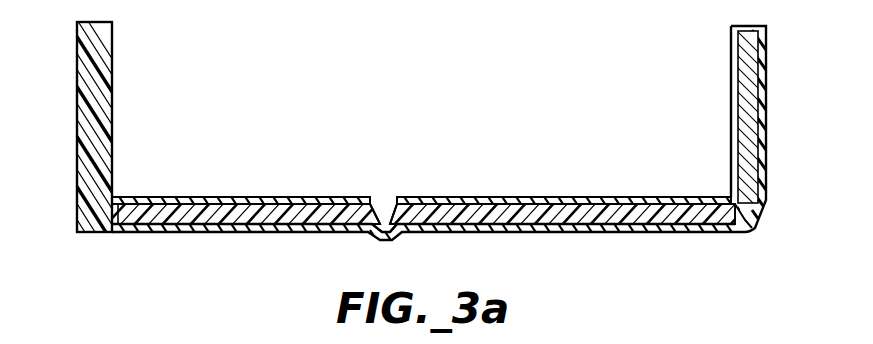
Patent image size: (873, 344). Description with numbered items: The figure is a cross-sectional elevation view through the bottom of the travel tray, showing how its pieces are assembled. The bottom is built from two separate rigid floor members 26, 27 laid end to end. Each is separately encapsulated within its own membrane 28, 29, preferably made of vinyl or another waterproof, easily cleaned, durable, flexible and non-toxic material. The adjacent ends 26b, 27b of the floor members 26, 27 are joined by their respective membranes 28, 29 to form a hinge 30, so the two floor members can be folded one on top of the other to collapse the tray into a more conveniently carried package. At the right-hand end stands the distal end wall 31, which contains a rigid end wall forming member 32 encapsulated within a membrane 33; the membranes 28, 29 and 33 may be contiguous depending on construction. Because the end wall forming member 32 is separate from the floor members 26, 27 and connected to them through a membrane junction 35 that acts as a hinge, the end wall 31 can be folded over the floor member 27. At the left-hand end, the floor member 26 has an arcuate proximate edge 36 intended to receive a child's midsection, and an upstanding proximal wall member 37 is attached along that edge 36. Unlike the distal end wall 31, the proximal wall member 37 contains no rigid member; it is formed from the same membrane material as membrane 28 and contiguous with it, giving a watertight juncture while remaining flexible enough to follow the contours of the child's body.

The floor member 26 is at (173, 206).
The adjacent end of floor member 26 26b is at (372, 200).
The floor member 27 is at (607, 212).
The adjacent end of floor member 27 27b is at (393, 200).
The membrane 28 is at (283, 200).
The membrane 29 is at (483, 200).
The hinge 30 is at (385, 204).
The distal end wall 31 is at (788, 139).
The rigid end wall forming member 32 is at (750, 68).
The membrane 33 is at (763, 150).
The membrane junction 35 is at (755, 222).
The arcuate proximate edge 36 is at (112, 214).
The proximal wall member 37 is at (92, 128).